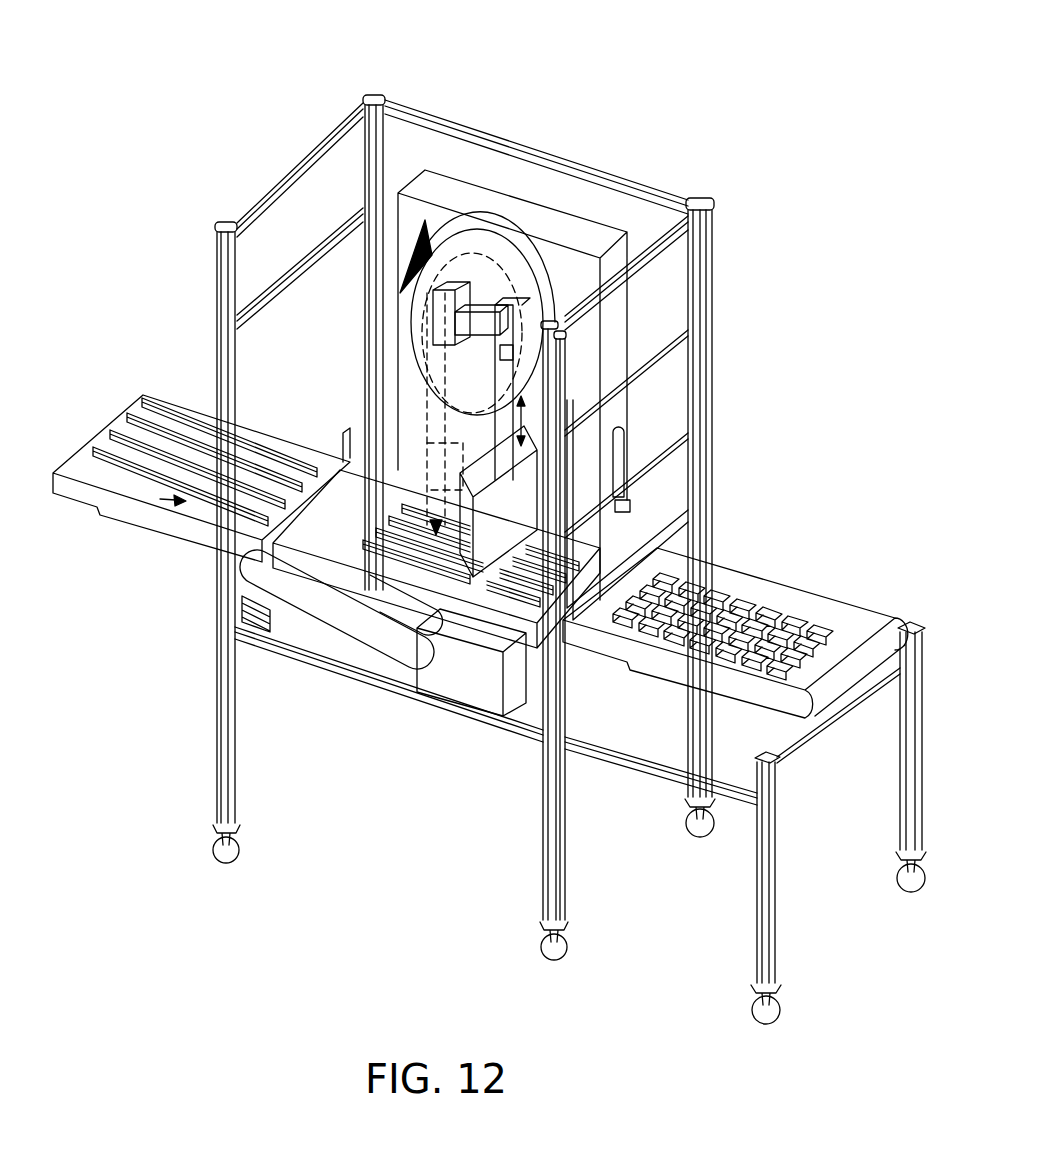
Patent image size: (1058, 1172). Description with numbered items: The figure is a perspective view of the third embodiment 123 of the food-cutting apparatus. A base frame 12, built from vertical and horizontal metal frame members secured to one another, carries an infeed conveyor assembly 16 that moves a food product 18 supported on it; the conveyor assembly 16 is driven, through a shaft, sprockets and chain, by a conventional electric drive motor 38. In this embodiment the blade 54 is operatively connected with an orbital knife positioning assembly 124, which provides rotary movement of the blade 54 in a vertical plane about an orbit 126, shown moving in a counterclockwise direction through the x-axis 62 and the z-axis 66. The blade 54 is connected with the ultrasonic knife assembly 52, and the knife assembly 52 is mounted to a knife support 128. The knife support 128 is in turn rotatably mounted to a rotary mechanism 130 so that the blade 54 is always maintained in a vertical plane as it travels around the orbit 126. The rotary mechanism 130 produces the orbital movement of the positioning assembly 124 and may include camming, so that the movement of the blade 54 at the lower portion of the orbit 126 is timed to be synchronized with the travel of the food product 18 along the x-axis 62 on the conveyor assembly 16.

The base frame 12 is at (313, 143).
The conveyor assembly 16 is at (767, 563).
The food product 18 is at (175, 430).
The electric drive motor 38 is at (488, 678).
The ultrasonic knife assembly 52 is at (463, 477).
The blade 54 is at (510, 502).
The x-axis 62 is at (127, 490).
The z-axis 66 is at (697, 313).
The third embodiment 123 is at (590, 113).
The orbital knife positioning assembly 124 is at (483, 236).
The orbit 126 is at (463, 250).
The knife support 128 is at (550, 280).
The rotary mechanism 130 is at (512, 285).